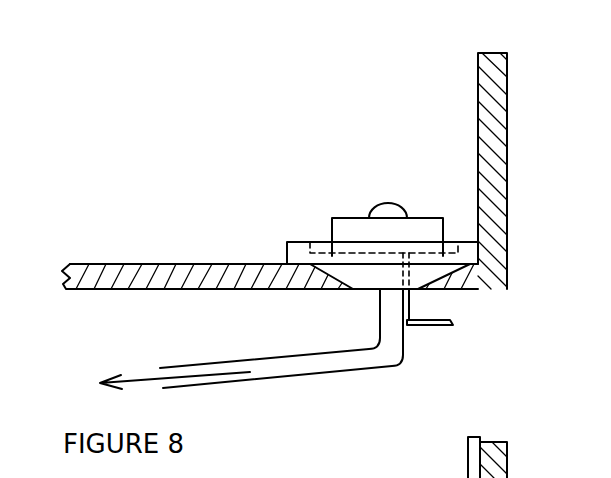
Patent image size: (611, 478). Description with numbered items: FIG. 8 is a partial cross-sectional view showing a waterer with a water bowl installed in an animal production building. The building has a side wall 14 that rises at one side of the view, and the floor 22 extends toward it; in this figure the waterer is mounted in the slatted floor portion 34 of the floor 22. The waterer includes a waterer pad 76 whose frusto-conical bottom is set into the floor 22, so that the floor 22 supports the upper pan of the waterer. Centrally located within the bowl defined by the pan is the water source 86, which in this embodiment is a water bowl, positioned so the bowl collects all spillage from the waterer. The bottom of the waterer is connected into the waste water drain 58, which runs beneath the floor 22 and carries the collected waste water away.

The side wall 14 is at (502, 147).
The floor 22 is at (100, 287).
The slatted floor portion 34 is at (166, 264).
The waterer pad 76 is at (298, 242).
The water source 86 is at (367, 232).
The waste water drain 58 is at (287, 370).